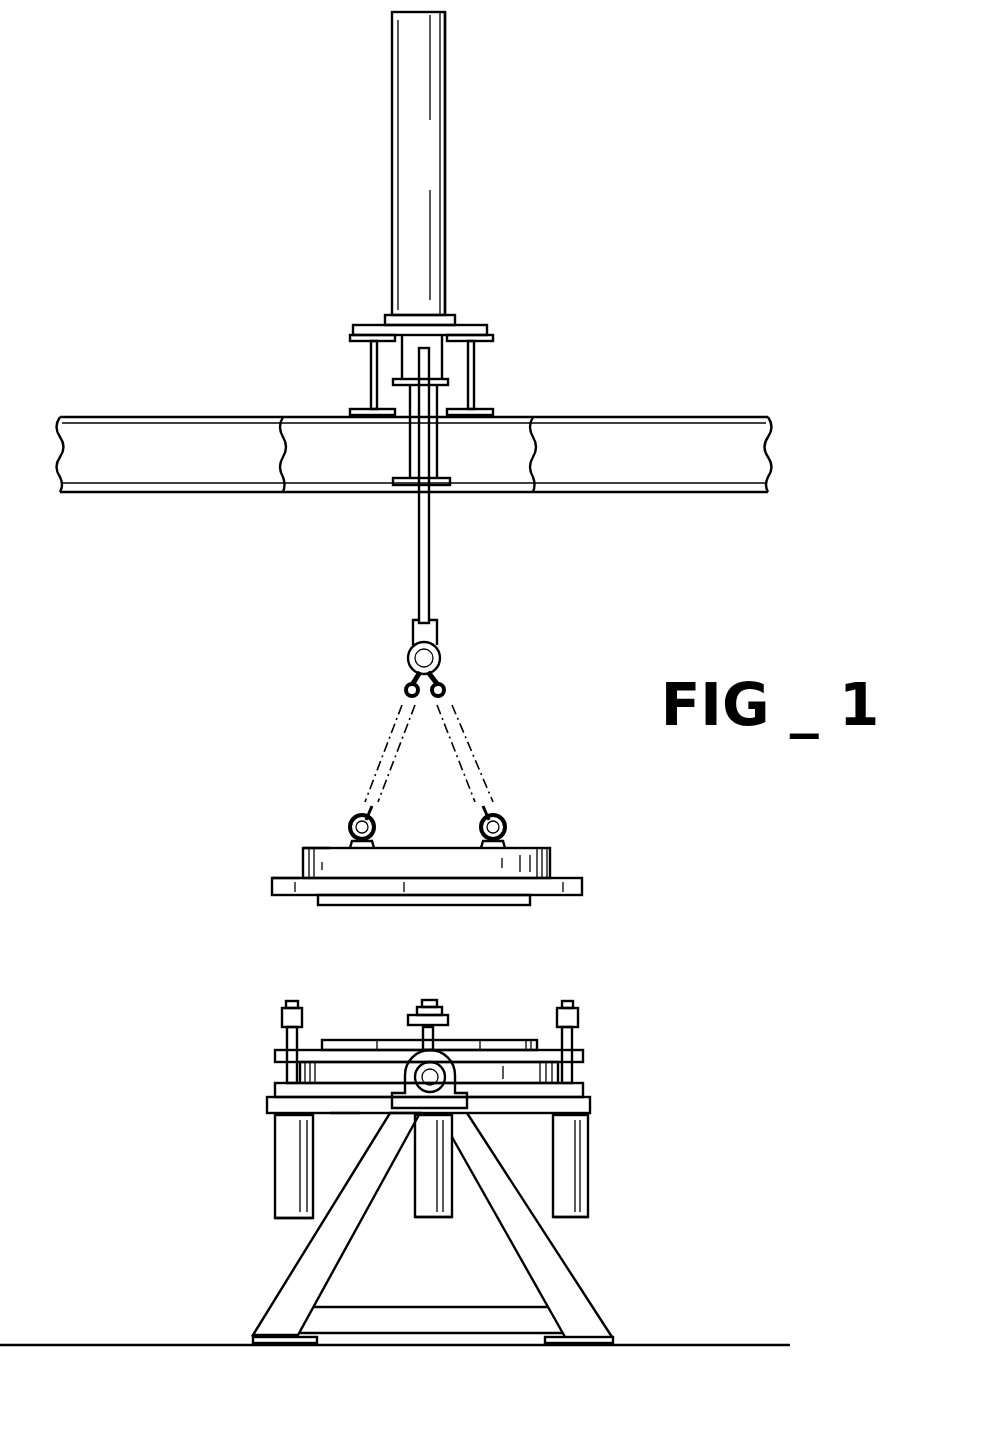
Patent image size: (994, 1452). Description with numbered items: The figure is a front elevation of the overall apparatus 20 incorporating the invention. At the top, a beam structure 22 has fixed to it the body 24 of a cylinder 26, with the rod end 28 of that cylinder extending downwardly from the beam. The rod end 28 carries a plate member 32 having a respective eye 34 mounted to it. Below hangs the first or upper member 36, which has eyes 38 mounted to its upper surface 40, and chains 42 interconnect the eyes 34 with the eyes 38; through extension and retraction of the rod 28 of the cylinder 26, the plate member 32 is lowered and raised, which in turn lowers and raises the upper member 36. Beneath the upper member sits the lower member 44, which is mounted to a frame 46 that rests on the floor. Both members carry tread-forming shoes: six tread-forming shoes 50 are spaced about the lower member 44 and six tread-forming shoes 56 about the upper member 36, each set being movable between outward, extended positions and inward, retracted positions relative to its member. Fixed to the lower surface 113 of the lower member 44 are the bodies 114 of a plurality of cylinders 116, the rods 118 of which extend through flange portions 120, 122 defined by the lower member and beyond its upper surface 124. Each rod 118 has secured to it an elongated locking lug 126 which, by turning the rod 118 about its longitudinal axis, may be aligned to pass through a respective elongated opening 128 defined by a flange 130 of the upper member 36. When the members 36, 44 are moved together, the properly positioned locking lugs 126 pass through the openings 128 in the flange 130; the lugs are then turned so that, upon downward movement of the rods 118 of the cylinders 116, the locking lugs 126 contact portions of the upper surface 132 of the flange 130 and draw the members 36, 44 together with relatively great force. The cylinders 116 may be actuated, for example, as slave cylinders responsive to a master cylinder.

The overall apparatus 20 is at (563, 634).
The beam structure 22 is at (527, 373).
The body 24 is at (430, 145).
The cylinder 26 is at (448, 238).
The rod end 28 is at (408, 436).
The plate member 32 is at (428, 565).
The eye 34 is at (406, 656).
The upper member 36 is at (553, 845).
The eye 38 is at (355, 818).
The upper surface 40 is at (305, 848).
The chain 42 is at (390, 735).
The lower member 44 is at (390, 1036).
The frame 46 is at (578, 1288).
The tread-forming shoe 50 is at (337, 1040).
The tread-forming shoe 56 is at (340, 905).
The lower surface 113 is at (343, 1113).
The body 114 is at (280, 1198).
The cylinder 116 is at (275, 1162).
The rod 118 is at (287, 1038).
The flange portion 120 is at (275, 1090).
The flange portion 122 is at (275, 1056).
The upper surface 124 is at (543, 1045).
The locking lug 126 is at (300, 1018).
The elongated opening 128 is at (298, 890).
The flange 130 is at (272, 887).
The upper surface 132 is at (272, 878).